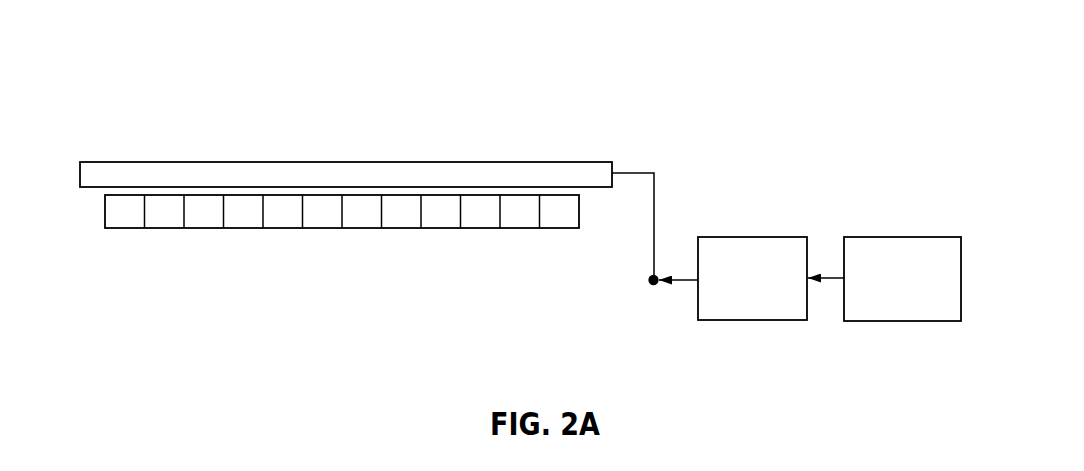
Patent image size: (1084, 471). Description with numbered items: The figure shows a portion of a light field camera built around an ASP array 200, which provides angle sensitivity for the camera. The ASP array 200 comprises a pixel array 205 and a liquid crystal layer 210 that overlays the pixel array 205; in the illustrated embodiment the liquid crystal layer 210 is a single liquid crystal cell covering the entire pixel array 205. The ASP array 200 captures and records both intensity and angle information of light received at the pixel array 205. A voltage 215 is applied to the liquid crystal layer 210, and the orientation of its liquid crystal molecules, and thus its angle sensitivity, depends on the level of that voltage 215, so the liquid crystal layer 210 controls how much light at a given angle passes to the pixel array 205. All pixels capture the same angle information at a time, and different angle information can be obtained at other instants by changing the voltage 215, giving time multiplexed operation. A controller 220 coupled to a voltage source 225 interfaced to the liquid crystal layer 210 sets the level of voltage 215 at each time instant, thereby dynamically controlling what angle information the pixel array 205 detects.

The ASP array 200 is at (376, 187).
The pixel array 205 is at (211, 221).
The liquid crystal layer 210 is at (190, 162).
The voltage 215 is at (654, 289).
The controller 220 is at (885, 302).
The voltage source 225 is at (734, 308).